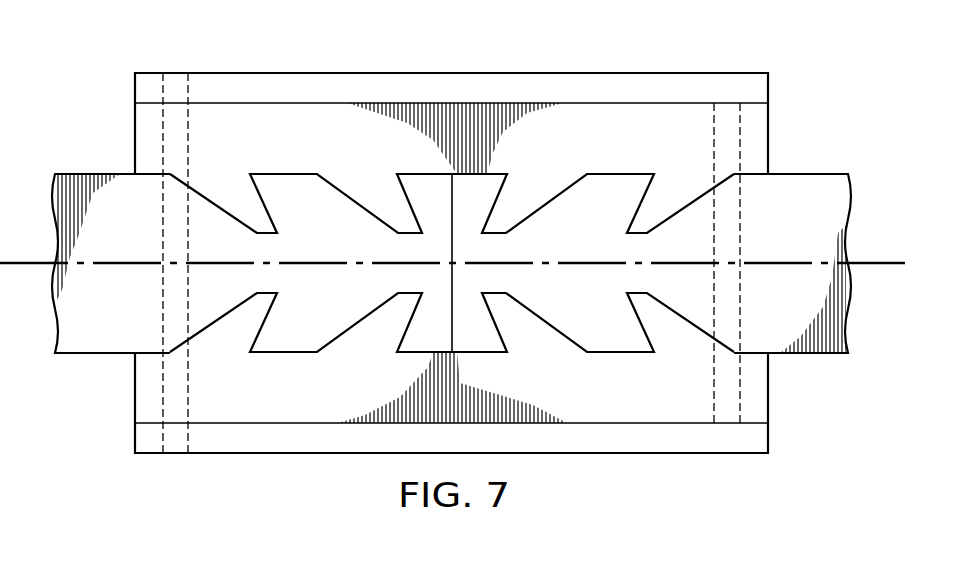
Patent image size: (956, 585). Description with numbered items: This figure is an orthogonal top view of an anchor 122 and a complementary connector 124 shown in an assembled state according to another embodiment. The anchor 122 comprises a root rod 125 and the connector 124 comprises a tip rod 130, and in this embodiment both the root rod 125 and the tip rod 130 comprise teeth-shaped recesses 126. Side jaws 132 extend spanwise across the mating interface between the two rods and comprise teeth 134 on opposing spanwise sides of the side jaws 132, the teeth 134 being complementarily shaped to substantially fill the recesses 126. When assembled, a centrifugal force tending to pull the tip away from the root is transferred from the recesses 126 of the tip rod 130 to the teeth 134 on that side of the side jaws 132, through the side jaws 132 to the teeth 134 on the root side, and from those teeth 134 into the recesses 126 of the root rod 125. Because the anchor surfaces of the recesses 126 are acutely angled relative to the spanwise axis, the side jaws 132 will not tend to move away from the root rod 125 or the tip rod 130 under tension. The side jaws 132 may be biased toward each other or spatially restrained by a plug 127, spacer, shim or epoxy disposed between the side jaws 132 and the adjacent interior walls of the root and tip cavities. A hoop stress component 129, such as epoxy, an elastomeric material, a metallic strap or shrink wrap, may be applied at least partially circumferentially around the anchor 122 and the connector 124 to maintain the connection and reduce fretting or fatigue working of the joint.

The anchor 122 is at (104, 170).
The connector 124 is at (801, 170).
The root rod 125 is at (78, 346).
The recesses 126 is at (205, 196).
The plug 127 is at (465, 73).
The hoop stress component 129 is at (162, 395).
The tip rod 130 is at (808, 346).
The side jaws 132 is at (610, 113).
The teeth 134 is at (244, 216).